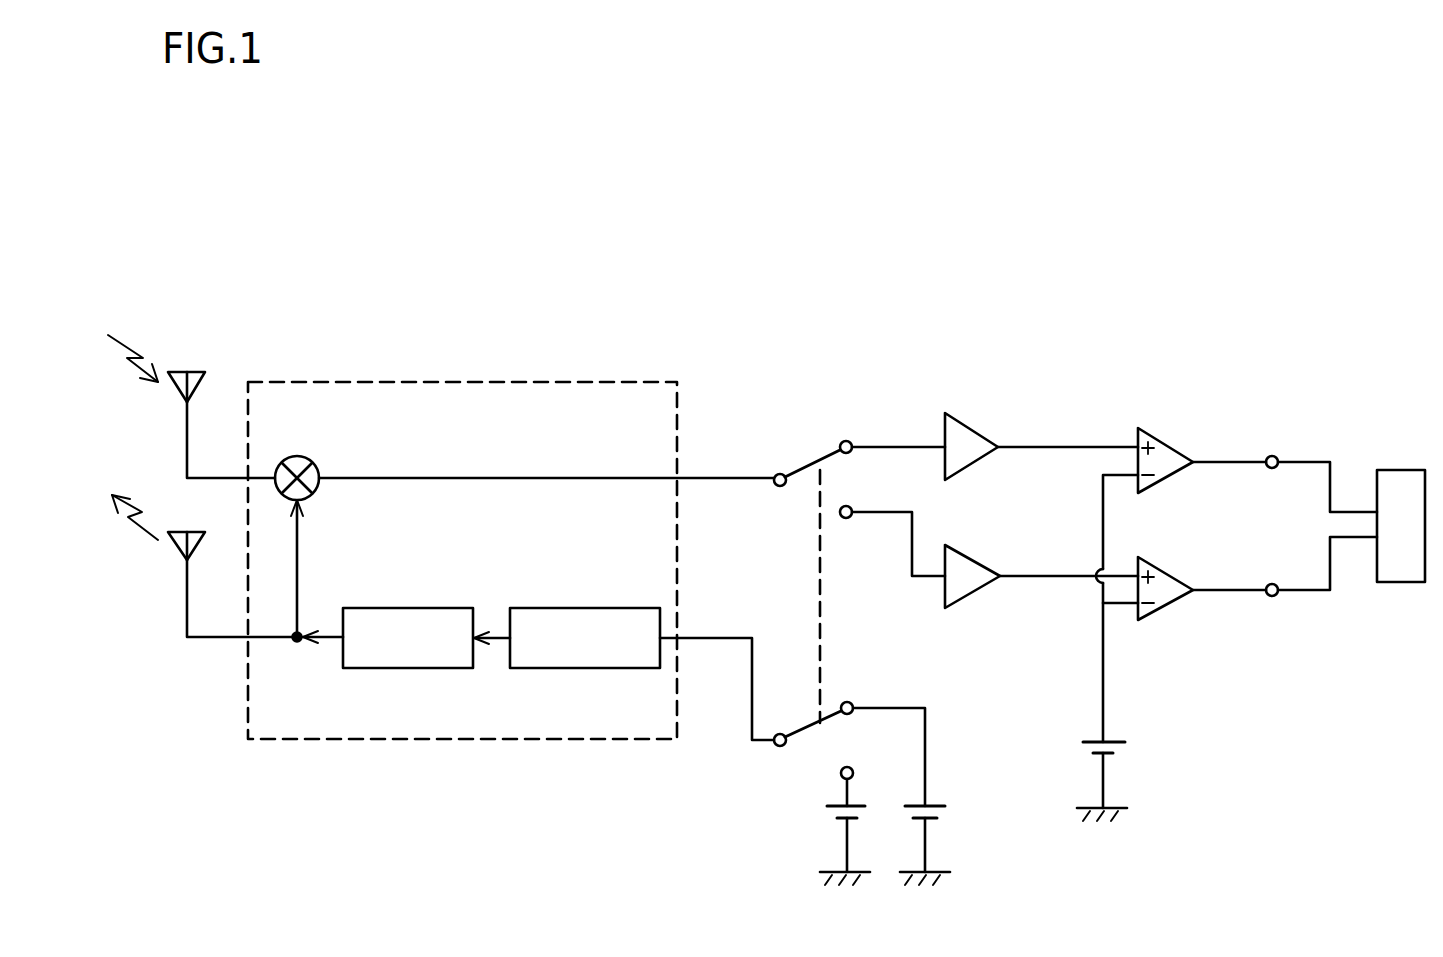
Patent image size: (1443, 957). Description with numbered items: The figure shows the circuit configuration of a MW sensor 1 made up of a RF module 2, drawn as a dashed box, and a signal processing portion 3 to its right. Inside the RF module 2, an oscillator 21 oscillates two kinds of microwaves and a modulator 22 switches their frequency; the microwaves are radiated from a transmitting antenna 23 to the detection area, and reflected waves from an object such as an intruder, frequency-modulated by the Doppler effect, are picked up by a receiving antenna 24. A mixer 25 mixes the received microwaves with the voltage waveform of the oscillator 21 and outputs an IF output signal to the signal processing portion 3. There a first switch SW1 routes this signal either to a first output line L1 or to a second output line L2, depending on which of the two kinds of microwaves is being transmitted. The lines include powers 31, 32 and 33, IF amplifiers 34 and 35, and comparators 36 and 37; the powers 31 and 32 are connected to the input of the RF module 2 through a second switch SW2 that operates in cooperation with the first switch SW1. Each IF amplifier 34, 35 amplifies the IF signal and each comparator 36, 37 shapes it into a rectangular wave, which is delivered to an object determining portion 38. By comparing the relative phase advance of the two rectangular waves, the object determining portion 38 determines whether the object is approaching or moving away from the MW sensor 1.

The MW sensor 1 is at (158, 209).
The RF module 2 is at (560, 382).
The signal processing portion 3 is at (898, 307).
The oscillator 21 is at (426, 608).
The modulator 22 is at (593, 608).
The transmitting antenna 23 is at (175, 543).
The receiving antenna 24 is at (198, 370).
The mixer 25 is at (312, 456).
The power 31 is at (937, 805).
The power 32 is at (833, 803).
The power 33 is at (1107, 742).
The IF amplifier 34 is at (972, 427).
The IF amplifier 35 is at (972, 595).
The comparator 36 is at (1173, 437).
The comparator 37 is at (1167, 608).
The object determining portion 38 is at (1405, 470).
The first switch SW1 is at (805, 467).
The second switch SW2 is at (808, 738).
The first output line L1 is at (1062, 445).
The second output line L2 is at (1050, 573).